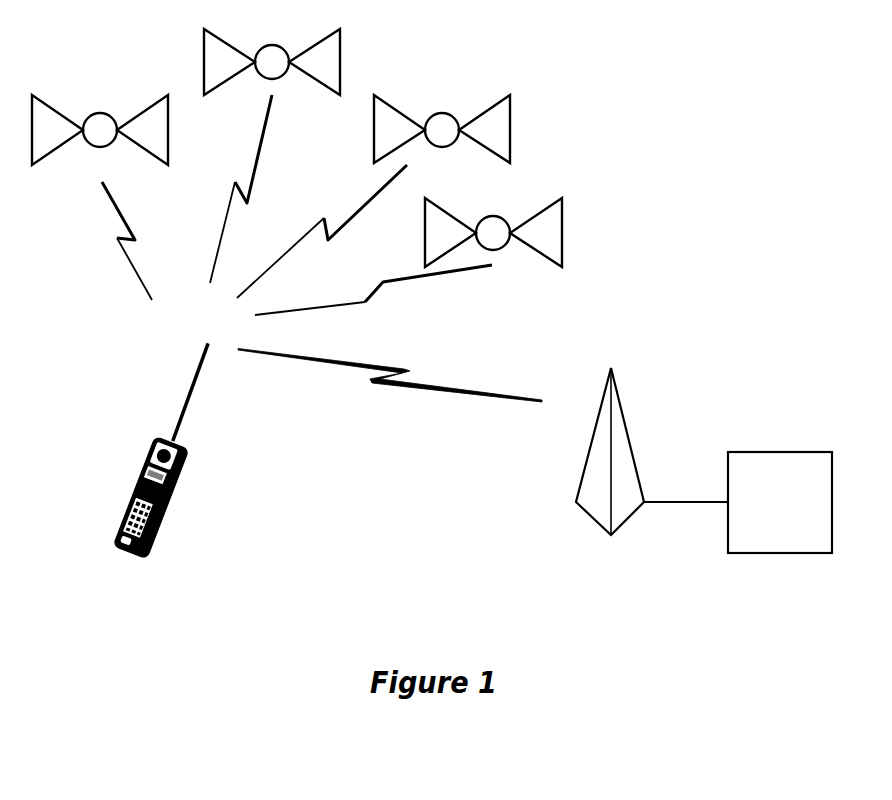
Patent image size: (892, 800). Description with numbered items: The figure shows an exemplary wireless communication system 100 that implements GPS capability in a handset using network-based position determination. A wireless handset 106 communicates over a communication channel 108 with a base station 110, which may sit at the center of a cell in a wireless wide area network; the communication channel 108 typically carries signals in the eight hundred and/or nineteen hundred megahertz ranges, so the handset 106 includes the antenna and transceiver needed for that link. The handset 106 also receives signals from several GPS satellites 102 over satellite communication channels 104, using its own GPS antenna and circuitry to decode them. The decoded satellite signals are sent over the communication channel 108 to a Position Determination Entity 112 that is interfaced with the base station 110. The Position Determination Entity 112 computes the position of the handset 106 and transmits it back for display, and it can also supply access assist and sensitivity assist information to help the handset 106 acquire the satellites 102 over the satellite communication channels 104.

The communication system 100 is at (667, 113).
The GPS satellites 102 is at (104, 110).
The satellite communication channels 104 is at (133, 233).
The wireless handset 106 is at (197, 448).
The communication channel 108 is at (403, 370).
The base station 110 is at (623, 413).
The Position Determination Entity (PDE) 112 is at (770, 450).